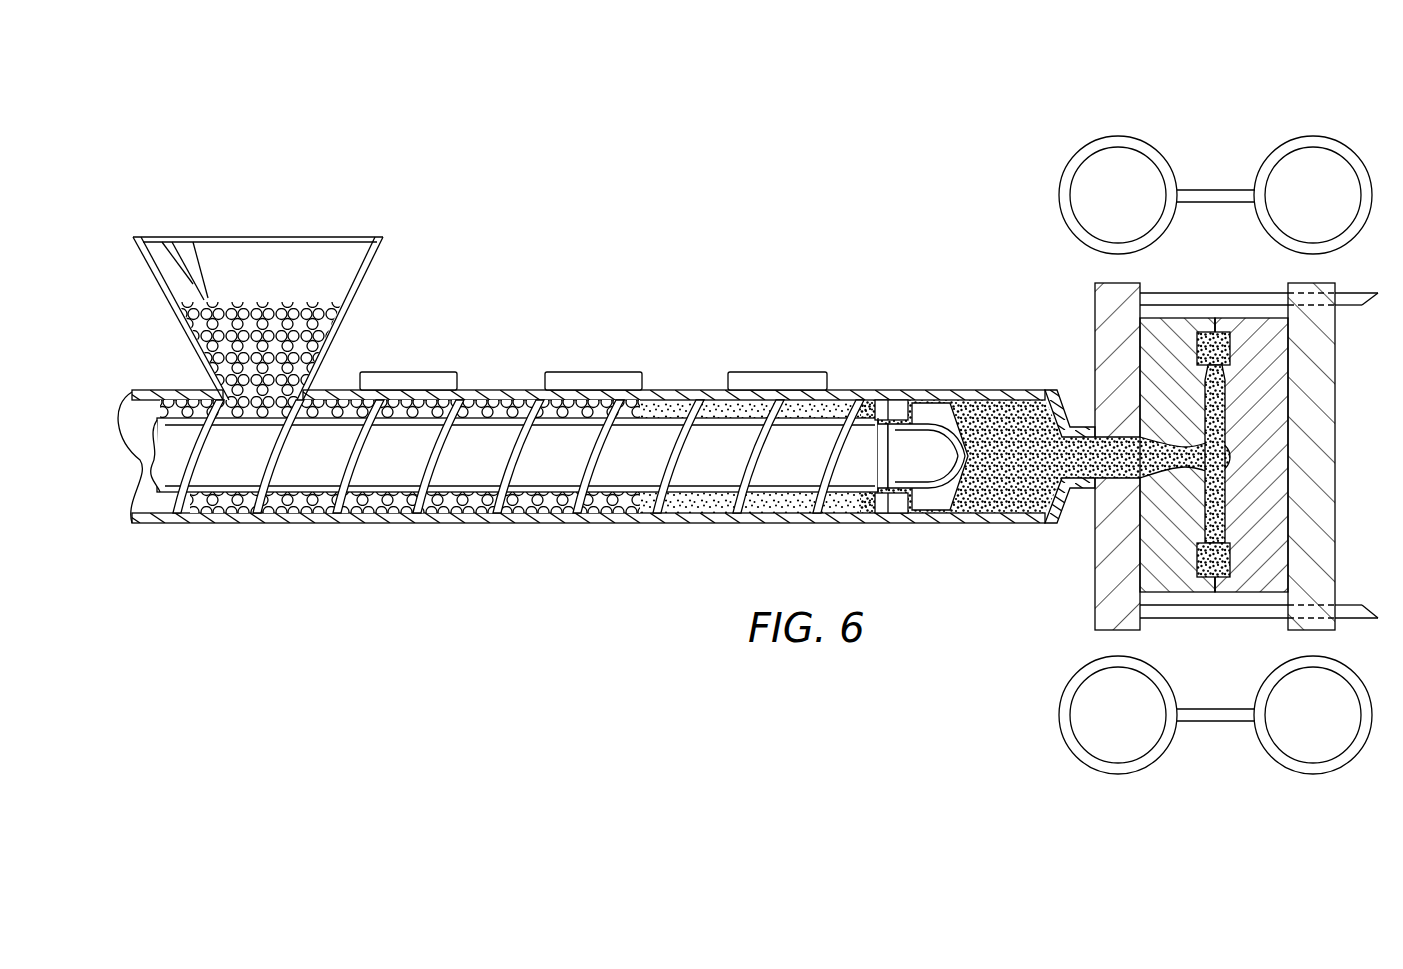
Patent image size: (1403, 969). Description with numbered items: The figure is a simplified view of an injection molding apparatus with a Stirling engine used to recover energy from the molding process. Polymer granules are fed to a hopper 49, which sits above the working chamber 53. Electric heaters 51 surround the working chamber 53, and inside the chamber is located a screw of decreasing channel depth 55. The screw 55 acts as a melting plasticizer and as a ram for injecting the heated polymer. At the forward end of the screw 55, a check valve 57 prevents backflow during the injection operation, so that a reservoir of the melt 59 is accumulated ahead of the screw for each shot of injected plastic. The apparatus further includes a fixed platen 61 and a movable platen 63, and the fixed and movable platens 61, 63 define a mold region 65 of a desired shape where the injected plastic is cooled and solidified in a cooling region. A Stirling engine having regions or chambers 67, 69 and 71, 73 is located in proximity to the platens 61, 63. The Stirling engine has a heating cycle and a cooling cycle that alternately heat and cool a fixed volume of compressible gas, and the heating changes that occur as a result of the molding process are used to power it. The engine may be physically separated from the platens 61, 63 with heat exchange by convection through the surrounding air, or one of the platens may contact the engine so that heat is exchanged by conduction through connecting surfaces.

The hopper 49 is at (250, 246).
The electric heaters 51 is at (406, 372).
The working chamber 53 is at (392, 506).
The screw of decreasing channel depth 55 is at (541, 469).
The check valve 57 is at (890, 402).
The reservoir of the melt 59 is at (1000, 405).
The fixed platen 61 is at (1095, 309).
The movable platen 63 is at (1337, 544).
The mold region 65 is at (1216, 398).
The Stirling engine region 67 is at (1103, 209).
The Stirling engine region 69 is at (1298, 209).
The Stirling engine region 71 is at (1103, 729).
The Stirling engine region 73 is at (1298, 729).